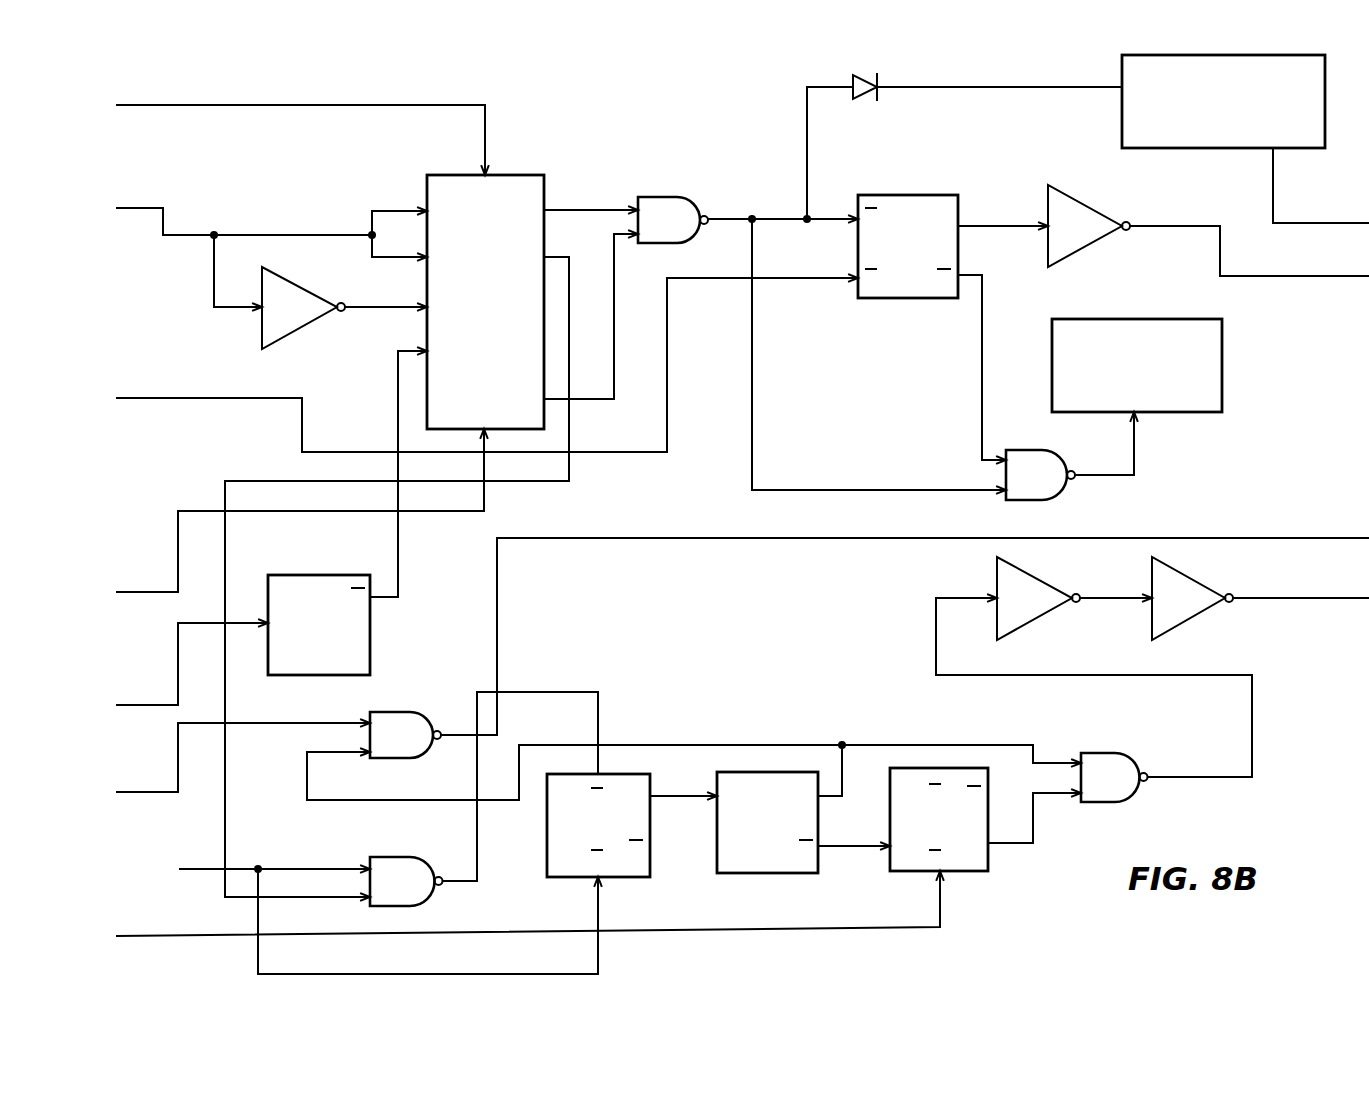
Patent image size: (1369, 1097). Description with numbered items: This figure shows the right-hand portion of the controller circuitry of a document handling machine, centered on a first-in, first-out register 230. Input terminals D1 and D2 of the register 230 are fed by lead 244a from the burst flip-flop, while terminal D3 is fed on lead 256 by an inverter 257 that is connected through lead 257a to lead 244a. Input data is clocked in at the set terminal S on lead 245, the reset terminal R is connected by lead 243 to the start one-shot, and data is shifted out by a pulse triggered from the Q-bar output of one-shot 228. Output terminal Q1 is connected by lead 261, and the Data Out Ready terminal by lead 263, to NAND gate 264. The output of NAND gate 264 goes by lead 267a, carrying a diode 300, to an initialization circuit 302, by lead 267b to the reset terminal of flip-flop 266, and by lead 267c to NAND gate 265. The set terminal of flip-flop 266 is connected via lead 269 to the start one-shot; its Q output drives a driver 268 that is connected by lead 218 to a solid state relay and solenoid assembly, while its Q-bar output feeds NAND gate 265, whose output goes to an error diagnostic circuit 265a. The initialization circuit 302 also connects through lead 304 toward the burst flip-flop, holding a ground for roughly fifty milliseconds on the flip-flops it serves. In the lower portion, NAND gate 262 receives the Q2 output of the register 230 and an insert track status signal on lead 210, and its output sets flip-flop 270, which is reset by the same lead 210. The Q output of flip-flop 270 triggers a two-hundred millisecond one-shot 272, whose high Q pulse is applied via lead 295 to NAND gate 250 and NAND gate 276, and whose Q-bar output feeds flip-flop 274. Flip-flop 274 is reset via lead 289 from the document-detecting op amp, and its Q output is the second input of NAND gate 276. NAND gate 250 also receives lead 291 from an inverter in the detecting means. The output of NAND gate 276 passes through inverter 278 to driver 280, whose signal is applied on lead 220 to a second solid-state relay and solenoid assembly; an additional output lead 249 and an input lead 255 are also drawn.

The lead 210 is at (196, 866).
The lead 218 is at (1318, 274).
The lead 220 is at (1280, 600).
The one-shot 228 is at (290, 575).
The FIFO register 230 is at (509, 177).
The lead 243 is at (132, 590).
The lead 244a is at (136, 206).
The lead 245 is at (150, 107).
The output line 249 is at (1298, 532).
The NAND gate 250 is at (416, 710).
The input line 255 is at (134, 702).
The lead 256 is at (385, 287).
The inverter 257 is at (300, 282).
The lead 257a is at (212, 263).
The lead 261 is at (567, 200).
The NAND gate 262 is at (416, 862).
The lead 263 is at (603, 401).
The NAND gate 264 is at (661, 196).
The NAND gate 265 is at (1065, 493).
The error diagnostic circuit 265a is at (1223, 392).
The flip-flop 266 is at (904, 299).
The lead 267a is at (912, 90).
The lead 267b is at (822, 222).
The lead 267c is at (755, 407).
The driver 268 is at (1100, 209).
The lead 269 is at (700, 283).
The flip-flop 270 is at (628, 878).
The 200 milli-second one-shot 272 is at (782, 875).
The flip-flop 274 is at (974, 874).
The NAND gate 276 is at (1134, 757).
The inverter 278 is at (1036, 616).
The driver 280 is at (1178, 620).
The lead 289 is at (142, 932).
The lead 291 is at (136, 790).
The lead 295 is at (746, 742).
The diode 300 is at (868, 97).
The initialization circuit 302 is at (1122, 108).
The lead 304 is at (1293, 220).